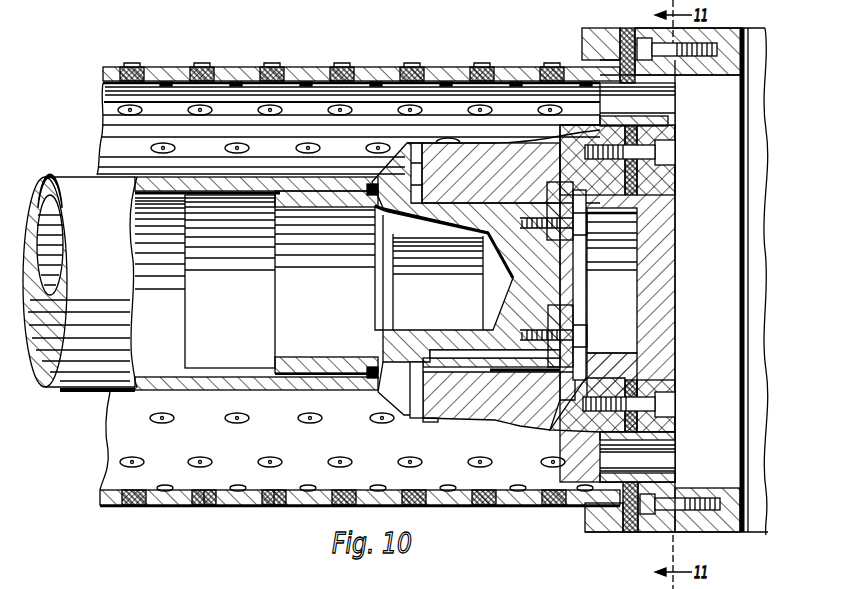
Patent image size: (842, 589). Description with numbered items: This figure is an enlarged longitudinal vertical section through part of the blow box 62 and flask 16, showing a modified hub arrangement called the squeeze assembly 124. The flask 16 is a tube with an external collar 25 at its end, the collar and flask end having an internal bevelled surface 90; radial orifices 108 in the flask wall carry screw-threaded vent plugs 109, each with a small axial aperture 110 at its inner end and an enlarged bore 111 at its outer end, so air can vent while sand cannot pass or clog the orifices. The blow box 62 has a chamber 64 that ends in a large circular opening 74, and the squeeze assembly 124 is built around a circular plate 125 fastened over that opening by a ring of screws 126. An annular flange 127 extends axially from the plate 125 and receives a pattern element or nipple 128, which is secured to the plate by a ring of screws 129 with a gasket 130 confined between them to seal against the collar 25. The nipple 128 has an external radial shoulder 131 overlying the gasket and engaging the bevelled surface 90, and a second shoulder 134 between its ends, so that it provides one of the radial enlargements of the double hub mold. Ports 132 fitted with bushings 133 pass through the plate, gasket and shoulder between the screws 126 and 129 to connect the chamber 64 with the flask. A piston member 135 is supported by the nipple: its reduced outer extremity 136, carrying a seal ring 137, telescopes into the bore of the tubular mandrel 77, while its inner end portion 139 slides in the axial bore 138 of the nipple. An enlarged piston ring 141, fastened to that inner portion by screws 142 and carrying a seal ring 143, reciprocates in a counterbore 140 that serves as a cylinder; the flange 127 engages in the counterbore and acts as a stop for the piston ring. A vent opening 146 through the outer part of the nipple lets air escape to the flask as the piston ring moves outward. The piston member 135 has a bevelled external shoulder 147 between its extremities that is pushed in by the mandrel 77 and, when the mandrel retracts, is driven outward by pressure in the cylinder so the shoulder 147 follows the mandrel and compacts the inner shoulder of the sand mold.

The flask 16 is at (226, 67).
The external collar 25 is at (582, 40).
The blow box 62 is at (691, 532).
The chamber 64 is at (742, 290).
The circular opening 74 is at (722, 409).
The tubular core member or mandrel 77 is at (63, 177).
The internal bevelled surface 90 is at (587, 511).
The radial orifices or ports 108 is at (150, 506).
The vent plug 109 is at (348, 490).
The axial aperture or bore 110 is at (212, 490).
The enlarged bore 111 is at (280, 506).
The squeeze assembly 124 is at (676, 347).
The circular plate 125 is at (676, 213).
The screws 126 is at (697, 494).
The annular flange 127 is at (622, 354).
The pattern element or nipple 128 is at (544, 417).
The screws 129 is at (670, 151).
The gasket 130 is at (631, 28).
The radial shoulder 131 is at (602, 482).
The ports 132 is at (672, 95).
The bushings 133 is at (668, 128).
The shoulder 134 is at (510, 427).
The piston member 135 is at (277, 301).
The reduced outer extremity 136 is at (355, 357).
The seal ring 137 is at (378, 392).
The axial bore 138 is at (443, 332).
The inner end portion 139 is at (446, 250).
The counterbore 140 is at (470, 296).
The piston ring or annular piston 141 is at (579, 253).
The screws 142 is at (587, 336).
The seal ring 143 is at (556, 200).
The vent opening 146 is at (487, 332).
The external radial shoulder 147 is at (403, 416).